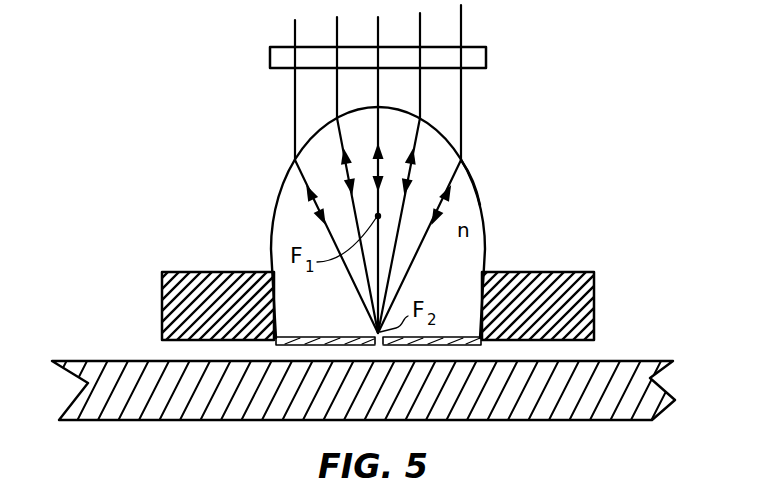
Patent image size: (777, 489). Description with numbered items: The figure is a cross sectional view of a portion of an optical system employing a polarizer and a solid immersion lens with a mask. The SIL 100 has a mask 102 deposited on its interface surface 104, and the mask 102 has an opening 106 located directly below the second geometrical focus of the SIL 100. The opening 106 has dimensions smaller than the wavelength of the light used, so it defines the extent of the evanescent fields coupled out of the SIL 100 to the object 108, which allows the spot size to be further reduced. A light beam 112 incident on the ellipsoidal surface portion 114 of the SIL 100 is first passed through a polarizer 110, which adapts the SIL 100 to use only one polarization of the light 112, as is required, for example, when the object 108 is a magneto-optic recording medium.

The SIL 100 is at (283, 223).
The mask 102 is at (275, 342).
The interface surface 104 is at (480, 335).
The opening 106 is at (375, 333).
The object 108 is at (620, 358).
The polarizer 110 is at (486, 50).
The light beam 112 is at (461, 112).
The ellipsoidal surface portion 114 is at (479, 202).